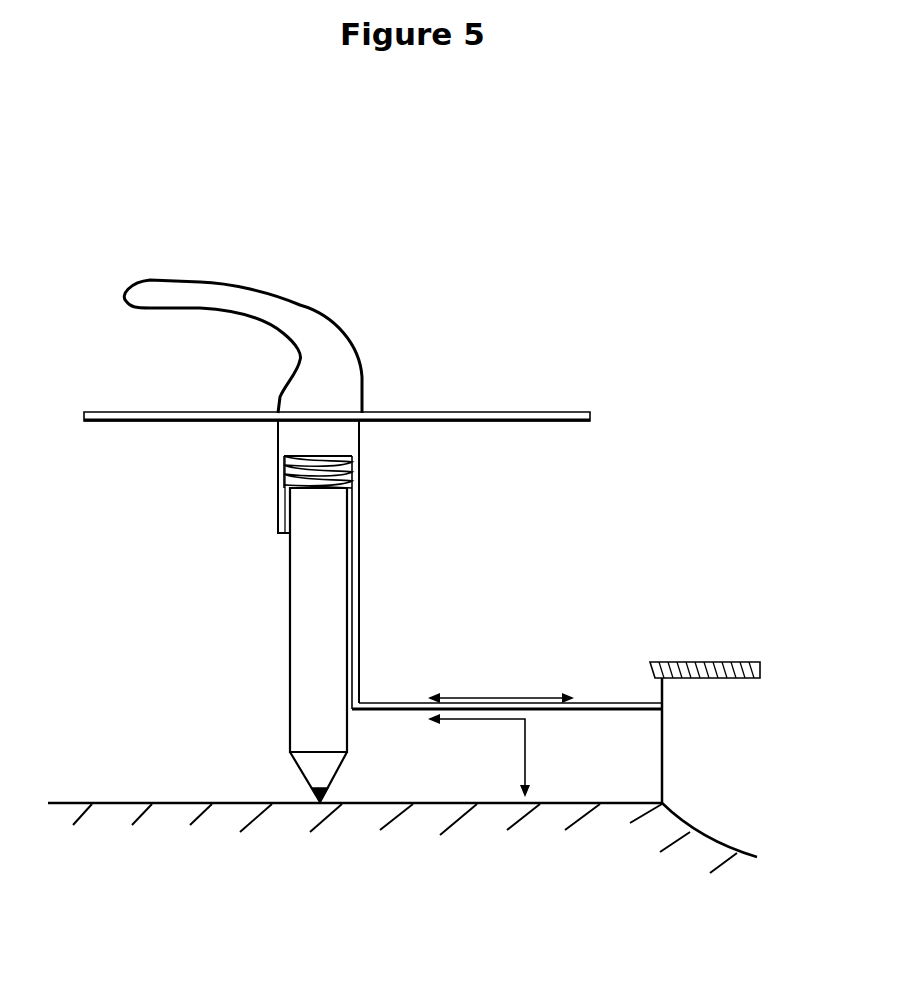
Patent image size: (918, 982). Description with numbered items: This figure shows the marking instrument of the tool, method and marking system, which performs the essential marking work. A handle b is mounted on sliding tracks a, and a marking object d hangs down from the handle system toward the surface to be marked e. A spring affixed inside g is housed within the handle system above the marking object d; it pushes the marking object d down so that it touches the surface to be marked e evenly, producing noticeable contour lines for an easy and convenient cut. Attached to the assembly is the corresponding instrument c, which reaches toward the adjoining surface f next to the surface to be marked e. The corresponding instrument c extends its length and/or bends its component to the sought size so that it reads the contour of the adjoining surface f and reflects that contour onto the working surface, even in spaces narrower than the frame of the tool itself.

The sliding tracks a is at (337, 392).
The handle b is at (243, 322).
The corresponding instrument c is at (507, 725).
The marking object d is at (299, 645).
The surface to be marked e is at (355, 841).
The adjoining surface f is at (705, 767).
The spring affixed inside g is at (348, 565).